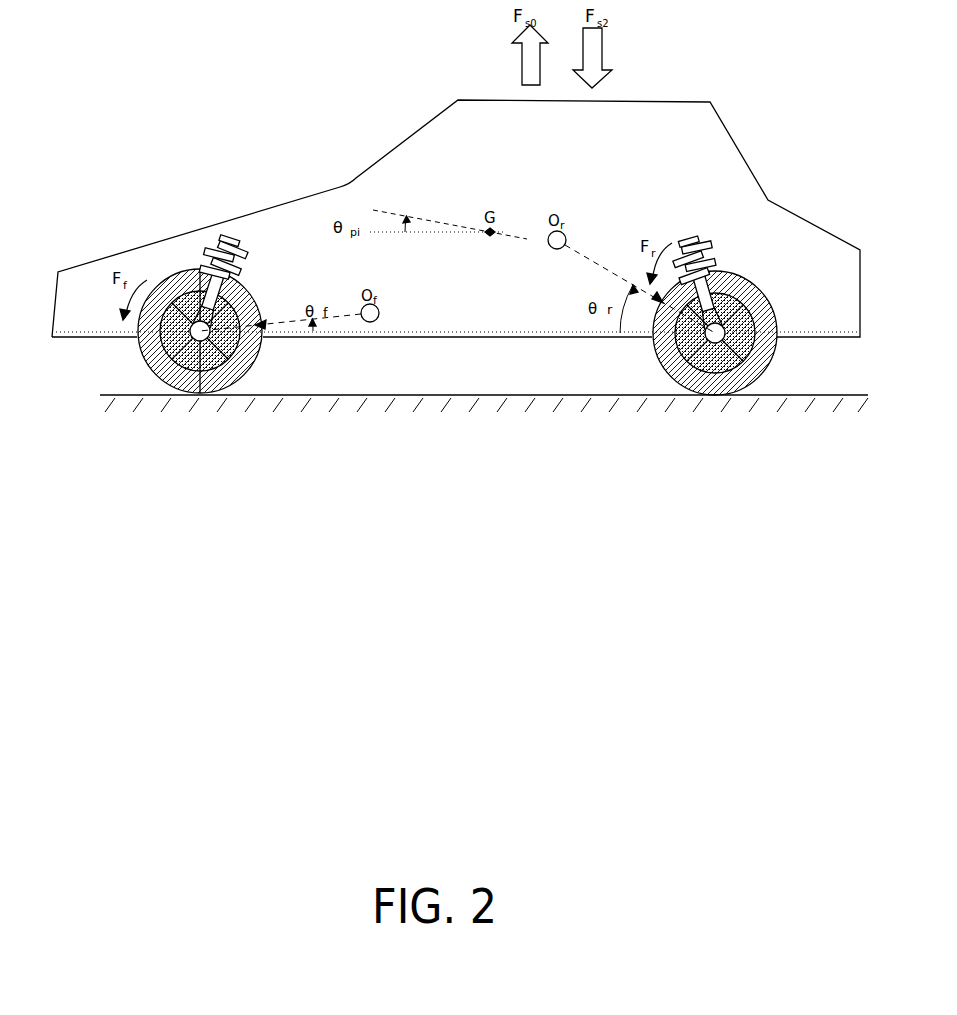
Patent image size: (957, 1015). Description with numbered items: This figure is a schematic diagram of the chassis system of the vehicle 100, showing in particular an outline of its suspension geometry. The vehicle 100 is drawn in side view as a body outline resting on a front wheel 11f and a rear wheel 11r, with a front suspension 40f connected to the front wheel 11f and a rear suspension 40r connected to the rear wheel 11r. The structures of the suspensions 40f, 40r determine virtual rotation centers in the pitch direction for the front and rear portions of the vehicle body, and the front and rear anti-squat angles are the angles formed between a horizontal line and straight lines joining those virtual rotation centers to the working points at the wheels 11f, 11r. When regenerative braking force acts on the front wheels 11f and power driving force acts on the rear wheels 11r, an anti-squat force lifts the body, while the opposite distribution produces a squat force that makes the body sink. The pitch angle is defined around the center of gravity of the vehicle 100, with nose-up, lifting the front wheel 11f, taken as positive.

The vehicle 100 is at (476, 98).
The front suspension 40f is at (238, 240).
The rear suspension 40r is at (703, 243).
The front wheels 11f is at (188, 398).
The rear wheels 11r is at (696, 398).